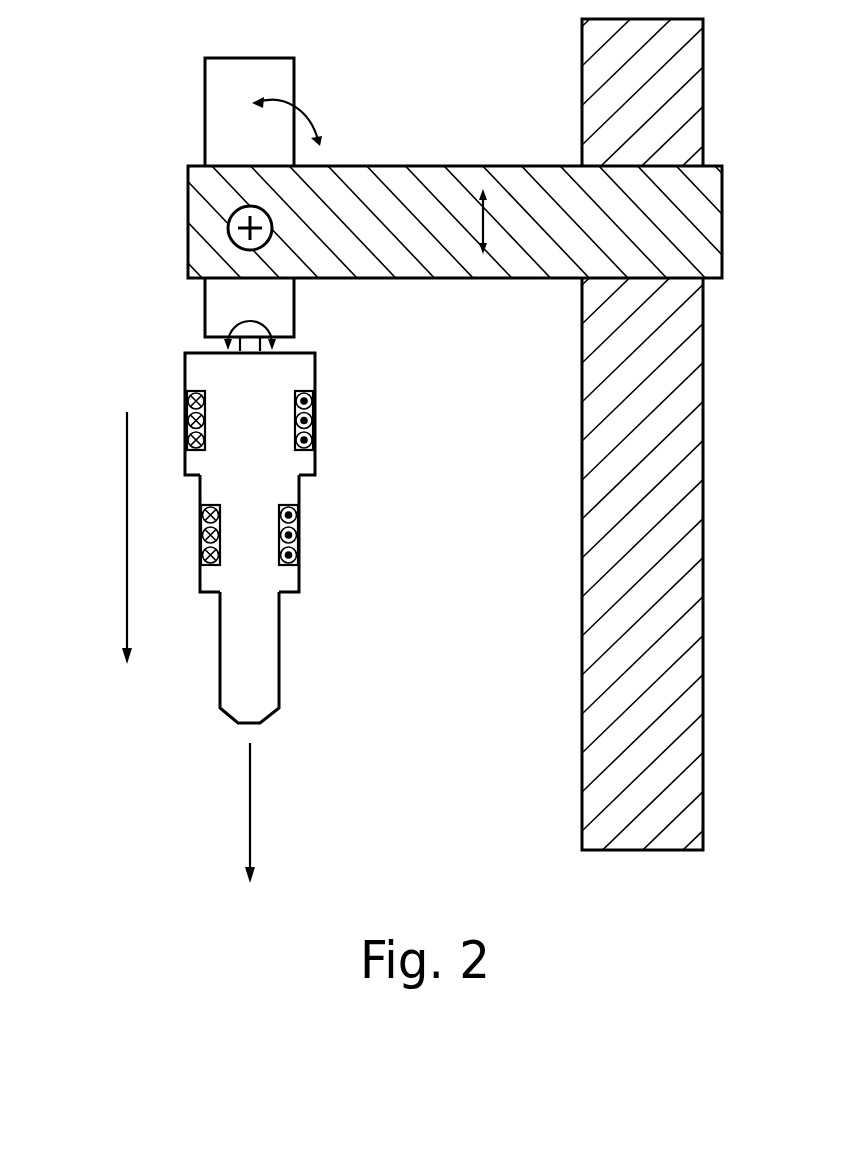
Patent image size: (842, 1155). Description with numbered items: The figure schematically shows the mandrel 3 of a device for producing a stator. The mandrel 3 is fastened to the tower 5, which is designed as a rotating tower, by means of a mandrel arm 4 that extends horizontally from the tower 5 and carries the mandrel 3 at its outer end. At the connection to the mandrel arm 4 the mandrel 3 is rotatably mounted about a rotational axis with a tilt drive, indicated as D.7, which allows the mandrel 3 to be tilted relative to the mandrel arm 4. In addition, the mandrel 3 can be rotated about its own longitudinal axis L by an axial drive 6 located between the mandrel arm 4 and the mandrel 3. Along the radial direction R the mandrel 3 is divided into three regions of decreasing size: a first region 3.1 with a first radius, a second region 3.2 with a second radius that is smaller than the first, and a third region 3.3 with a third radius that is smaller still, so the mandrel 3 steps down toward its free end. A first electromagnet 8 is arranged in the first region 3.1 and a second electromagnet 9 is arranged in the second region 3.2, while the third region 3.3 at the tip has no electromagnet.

The mandrel 3 is at (254, 548).
The first region 3.1 is at (305, 460).
The second region 3.2 is at (288, 575).
The third region 3.3 is at (260, 645).
The mandrel arm 4 is at (440, 188).
The tower 5 is at (687, 507).
The axial drive 6 is at (217, 339).
The rotational axis with tilt drive D.7 is at (228, 231).
The first electromagnet 8 is at (187, 395).
The second electromagnet 9 is at (200, 535).
The radial direction R is at (127, 505).
The longitudinal axis L is at (252, 813).